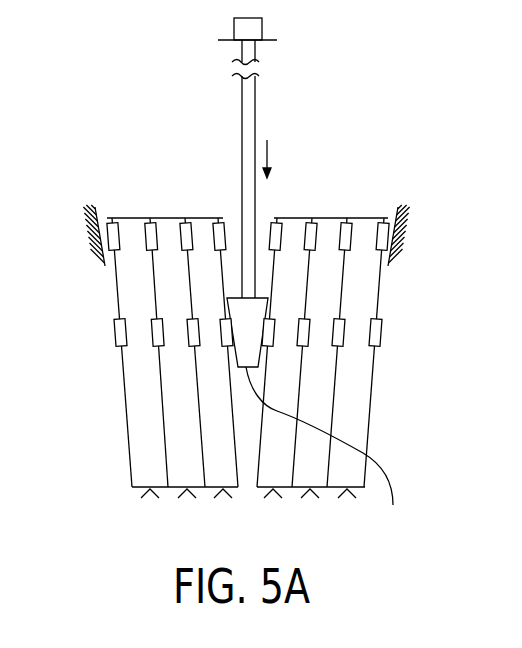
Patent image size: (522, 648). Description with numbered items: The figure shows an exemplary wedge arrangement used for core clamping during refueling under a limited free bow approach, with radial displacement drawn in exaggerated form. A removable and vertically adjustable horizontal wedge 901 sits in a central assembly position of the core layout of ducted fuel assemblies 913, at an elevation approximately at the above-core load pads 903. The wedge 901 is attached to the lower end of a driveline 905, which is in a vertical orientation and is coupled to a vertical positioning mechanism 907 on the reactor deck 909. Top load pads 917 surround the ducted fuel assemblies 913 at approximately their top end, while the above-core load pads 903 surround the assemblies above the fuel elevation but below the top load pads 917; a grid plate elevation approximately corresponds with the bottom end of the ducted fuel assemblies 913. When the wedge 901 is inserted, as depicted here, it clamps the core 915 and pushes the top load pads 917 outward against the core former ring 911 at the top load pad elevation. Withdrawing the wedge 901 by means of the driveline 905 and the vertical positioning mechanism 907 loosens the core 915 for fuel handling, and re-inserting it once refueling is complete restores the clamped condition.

The horizontal wedge 901 is at (325, 453).
The above-core load pads 903 is at (108, 335).
The driveline 905 is at (255, 95).
The vertical positioning mechanism 907 is at (234, 29).
The reactor deck 909 is at (228, 41).
The core former ring 911 is at (398, 208).
The ducted fuel assemblies 913 is at (126, 409).
The core 915 is at (373, 418).
The top load pads 917 is at (148, 222).